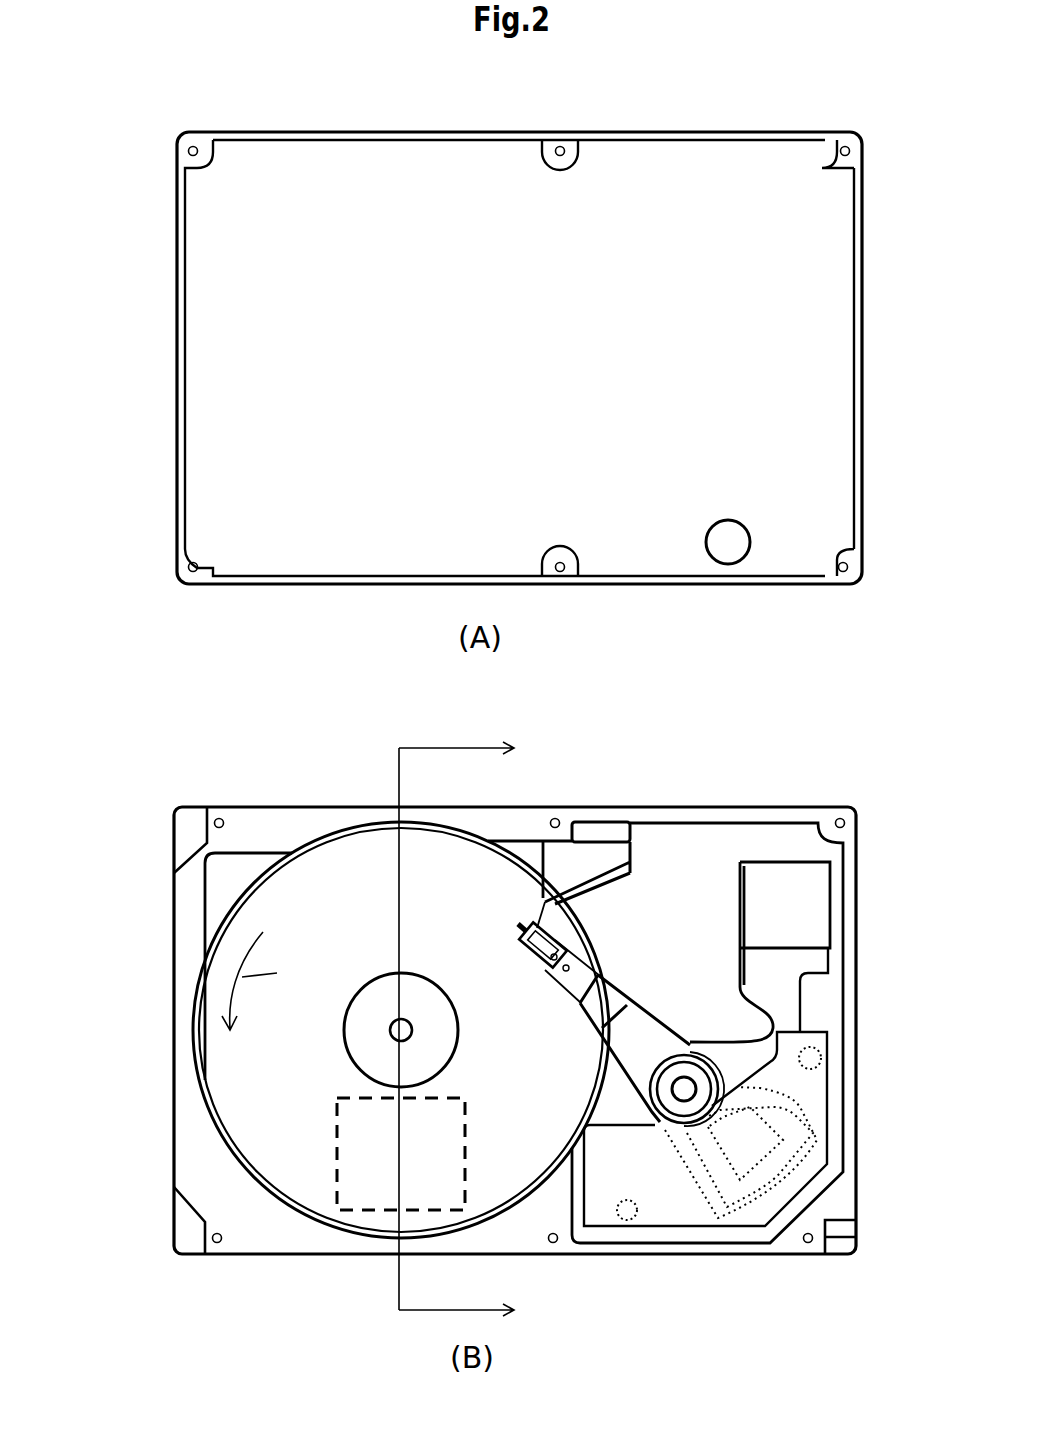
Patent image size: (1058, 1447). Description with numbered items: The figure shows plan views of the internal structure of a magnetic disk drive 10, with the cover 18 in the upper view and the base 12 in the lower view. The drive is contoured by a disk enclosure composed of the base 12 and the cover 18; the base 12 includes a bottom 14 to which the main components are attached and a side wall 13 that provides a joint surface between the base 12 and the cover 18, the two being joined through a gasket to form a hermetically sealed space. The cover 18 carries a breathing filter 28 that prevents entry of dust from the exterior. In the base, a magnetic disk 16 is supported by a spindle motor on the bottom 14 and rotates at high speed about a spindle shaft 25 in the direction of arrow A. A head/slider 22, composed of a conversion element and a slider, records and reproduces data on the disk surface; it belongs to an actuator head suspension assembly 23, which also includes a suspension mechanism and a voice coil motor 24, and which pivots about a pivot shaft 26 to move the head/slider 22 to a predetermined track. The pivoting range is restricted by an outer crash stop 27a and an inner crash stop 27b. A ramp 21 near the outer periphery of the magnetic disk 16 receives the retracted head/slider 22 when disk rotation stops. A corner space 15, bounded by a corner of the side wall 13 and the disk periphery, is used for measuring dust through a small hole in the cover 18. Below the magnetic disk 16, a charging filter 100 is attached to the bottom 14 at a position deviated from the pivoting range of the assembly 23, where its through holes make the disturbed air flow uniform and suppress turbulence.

The magnetic disk drive 10 is at (268, 727).
The base 12 is at (208, 786).
The side wall 13 is at (176, 813).
The bottom 14 is at (712, 947).
The corner space 15 is at (247, 874).
The magnetic disk 16 is at (220, 916).
The cover 18 is at (560, 122).
The ramp 21 is at (615, 872).
The head/slider 22 is at (549, 896).
The actuator head suspension assembly 23 is at (626, 959).
The voice coil motor 24 is at (675, 1188).
The spindle shaft 25 is at (410, 1028).
The pivot shaft 26 is at (700, 1083).
The outer crash stop 27a is at (618, 1212).
The inner crash stop 27b is at (821, 1057).
The breathing filter 28 is at (712, 540).
The charging filter 100 is at (370, 1143).